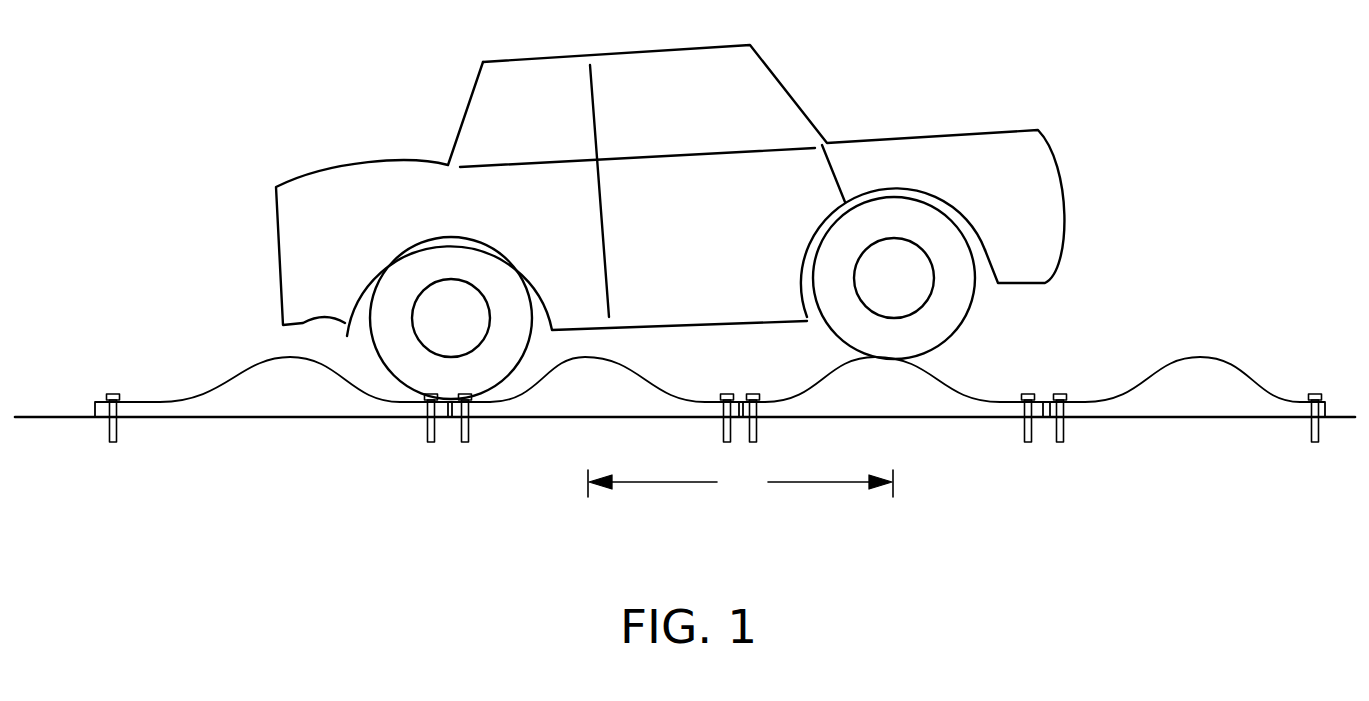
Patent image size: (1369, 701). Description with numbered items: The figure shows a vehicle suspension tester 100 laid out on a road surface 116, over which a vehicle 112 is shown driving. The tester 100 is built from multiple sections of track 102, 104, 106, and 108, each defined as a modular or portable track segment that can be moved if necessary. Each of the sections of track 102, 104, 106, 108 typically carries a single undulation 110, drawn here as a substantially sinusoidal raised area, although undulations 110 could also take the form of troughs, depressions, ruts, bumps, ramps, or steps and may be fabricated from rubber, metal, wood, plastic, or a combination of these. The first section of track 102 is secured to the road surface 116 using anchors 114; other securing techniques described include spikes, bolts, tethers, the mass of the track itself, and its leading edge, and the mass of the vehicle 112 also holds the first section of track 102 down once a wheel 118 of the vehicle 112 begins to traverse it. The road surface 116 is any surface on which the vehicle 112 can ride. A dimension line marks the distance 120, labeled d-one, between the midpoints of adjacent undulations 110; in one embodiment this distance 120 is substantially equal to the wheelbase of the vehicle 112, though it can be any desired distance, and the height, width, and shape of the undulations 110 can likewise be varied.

The vehicle suspension tester 100 is at (183, 292).
The first section of track 102 is at (300, 405).
The section of track 104 is at (610, 404).
The section of track 106 is at (904, 404).
The section of track 108 is at (1208, 403).
The undulation 110 is at (282, 357).
The vehicle 112 is at (982, 133).
The anchors 114 is at (113, 393).
The road surface 116 is at (48, 420).
The wheel 118 is at (915, 290).
The distance d1 120 is at (753, 500).